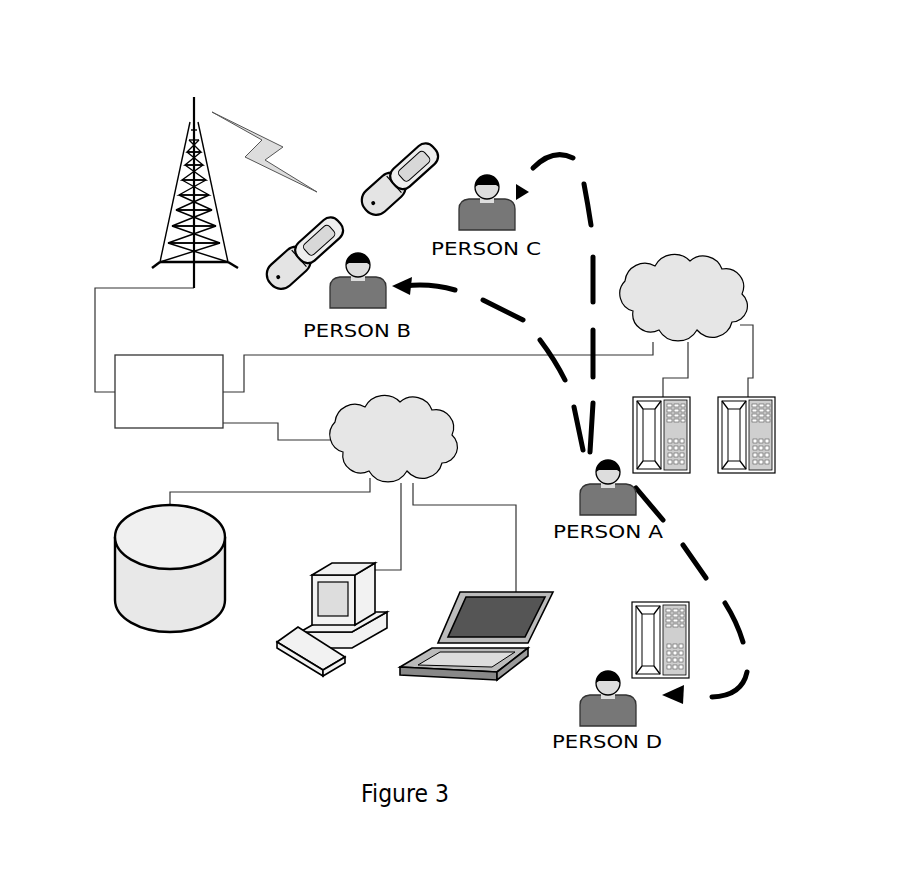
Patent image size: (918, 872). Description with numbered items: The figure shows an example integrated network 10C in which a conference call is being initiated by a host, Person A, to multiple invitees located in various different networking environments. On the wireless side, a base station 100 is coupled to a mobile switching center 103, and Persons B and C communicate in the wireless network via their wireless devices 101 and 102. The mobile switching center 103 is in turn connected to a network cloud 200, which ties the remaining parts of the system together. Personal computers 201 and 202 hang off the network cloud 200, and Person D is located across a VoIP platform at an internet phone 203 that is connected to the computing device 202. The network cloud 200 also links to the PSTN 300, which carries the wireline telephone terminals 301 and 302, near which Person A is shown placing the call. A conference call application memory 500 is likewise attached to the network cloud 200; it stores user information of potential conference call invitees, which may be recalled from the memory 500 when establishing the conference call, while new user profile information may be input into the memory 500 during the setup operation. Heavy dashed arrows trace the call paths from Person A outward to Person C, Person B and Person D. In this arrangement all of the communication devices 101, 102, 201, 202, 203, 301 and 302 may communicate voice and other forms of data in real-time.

The integrated network 10C is at (522, 66).
The base station 100 is at (234, 207).
The mobile terminal 101 is at (304, 264).
The mobile terminal 102 is at (399, 189).
The mobile switching center (MSC) 103 is at (147, 391).
The network cloud 200 is at (394, 430).
The personal computer 201 is at (332, 629).
The personal computer 202 is at (476, 644).
The VoIP telephone 203 is at (647, 640).
The PSTN 300 is at (684, 290).
The wireline telephone terminal 301 is at (648, 435).
The wireline telephone terminal 302 is at (734, 435).
The conference call application memory 500 is at (170, 573).